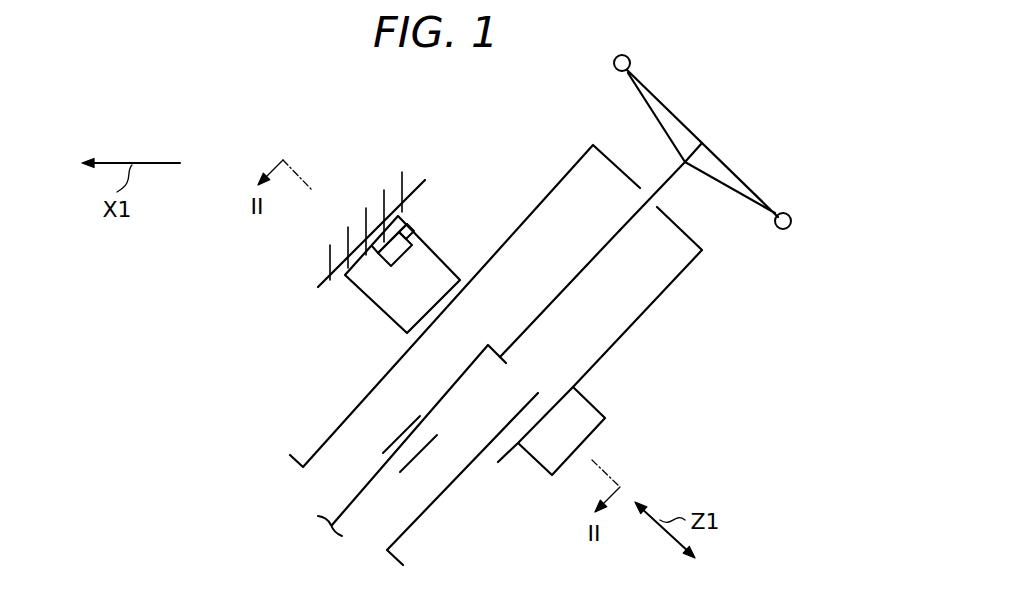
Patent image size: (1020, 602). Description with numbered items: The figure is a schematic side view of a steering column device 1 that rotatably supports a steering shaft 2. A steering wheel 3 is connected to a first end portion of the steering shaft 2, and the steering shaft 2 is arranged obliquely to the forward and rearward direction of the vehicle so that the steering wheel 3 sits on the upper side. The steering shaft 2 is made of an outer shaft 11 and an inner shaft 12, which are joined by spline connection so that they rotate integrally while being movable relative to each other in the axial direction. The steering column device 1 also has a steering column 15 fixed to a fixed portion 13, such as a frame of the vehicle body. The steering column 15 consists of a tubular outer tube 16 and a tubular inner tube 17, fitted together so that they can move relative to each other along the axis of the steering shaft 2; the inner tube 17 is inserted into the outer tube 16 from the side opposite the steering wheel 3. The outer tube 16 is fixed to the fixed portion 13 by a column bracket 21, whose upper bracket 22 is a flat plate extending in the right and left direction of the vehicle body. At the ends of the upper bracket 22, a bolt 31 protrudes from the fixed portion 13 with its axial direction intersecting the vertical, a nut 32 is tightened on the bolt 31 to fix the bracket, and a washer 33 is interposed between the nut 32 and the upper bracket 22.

The steering column device 1 is at (580, 130).
The steering shaft 2 is at (666, 178).
The steering wheel 3 is at (727, 165).
The outer shaft 11 is at (577, 275).
The inner shaft 12 is at (362, 493).
The fixed portion 13 is at (360, 257).
The steering column 15 is at (674, 290).
The outer tube 16 is at (512, 452).
The inner tube 17 is at (428, 508).
The column bracket 21 is at (380, 312).
The upper bracket 22 is at (342, 273).
The bolt 31 is at (414, 246).
The nut 32 is at (410, 230).
The washer 33 is at (403, 208).